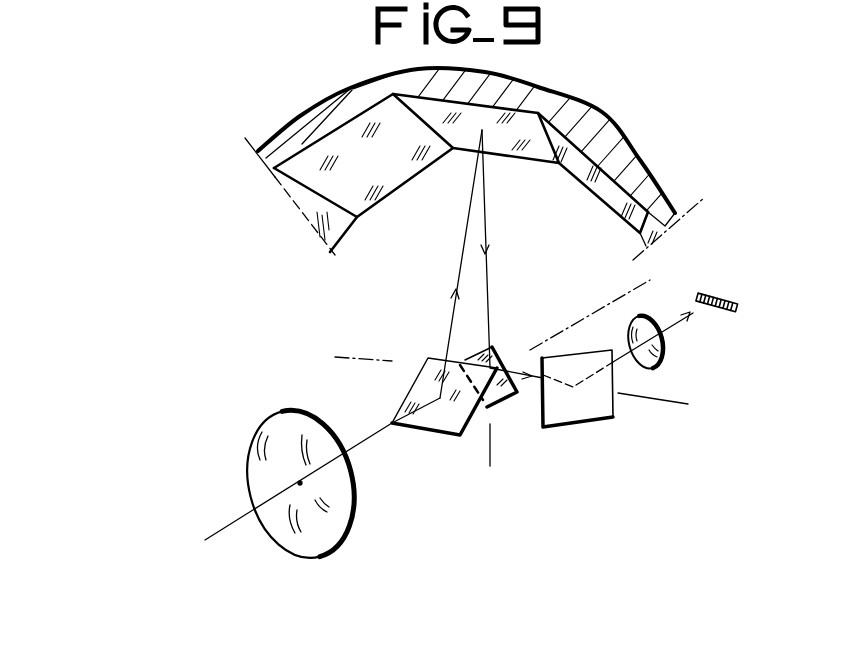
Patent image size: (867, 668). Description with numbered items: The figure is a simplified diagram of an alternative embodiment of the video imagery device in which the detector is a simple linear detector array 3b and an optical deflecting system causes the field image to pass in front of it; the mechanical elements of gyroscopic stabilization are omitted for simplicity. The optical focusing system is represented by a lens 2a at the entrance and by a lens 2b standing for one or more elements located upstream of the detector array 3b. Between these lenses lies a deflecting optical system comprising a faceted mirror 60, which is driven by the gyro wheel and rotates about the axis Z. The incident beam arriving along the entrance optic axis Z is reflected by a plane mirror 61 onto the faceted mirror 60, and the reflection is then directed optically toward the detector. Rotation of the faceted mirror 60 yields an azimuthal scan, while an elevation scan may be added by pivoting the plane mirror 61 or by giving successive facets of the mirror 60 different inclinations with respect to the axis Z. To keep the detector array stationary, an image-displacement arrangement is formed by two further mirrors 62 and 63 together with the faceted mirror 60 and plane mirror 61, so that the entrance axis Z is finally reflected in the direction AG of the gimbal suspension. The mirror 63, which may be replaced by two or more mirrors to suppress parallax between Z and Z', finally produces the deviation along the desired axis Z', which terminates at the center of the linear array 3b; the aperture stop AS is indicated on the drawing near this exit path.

The faceted mirror 60 is at (393, 177).
The plane mirror 61 is at (421, 390).
The mirror 62 is at (505, 355).
The mirror 63 is at (570, 415).
The lens 2a is at (273, 433).
The lens 2b is at (661, 357).
The detector array 3b is at (730, 297).
The axis Z is at (225, 515).
The axis Z' is at (668, 306).
The aperture stop AS is at (663, 400).
The direction AG of the gimbal suspension AG is at (490, 446).